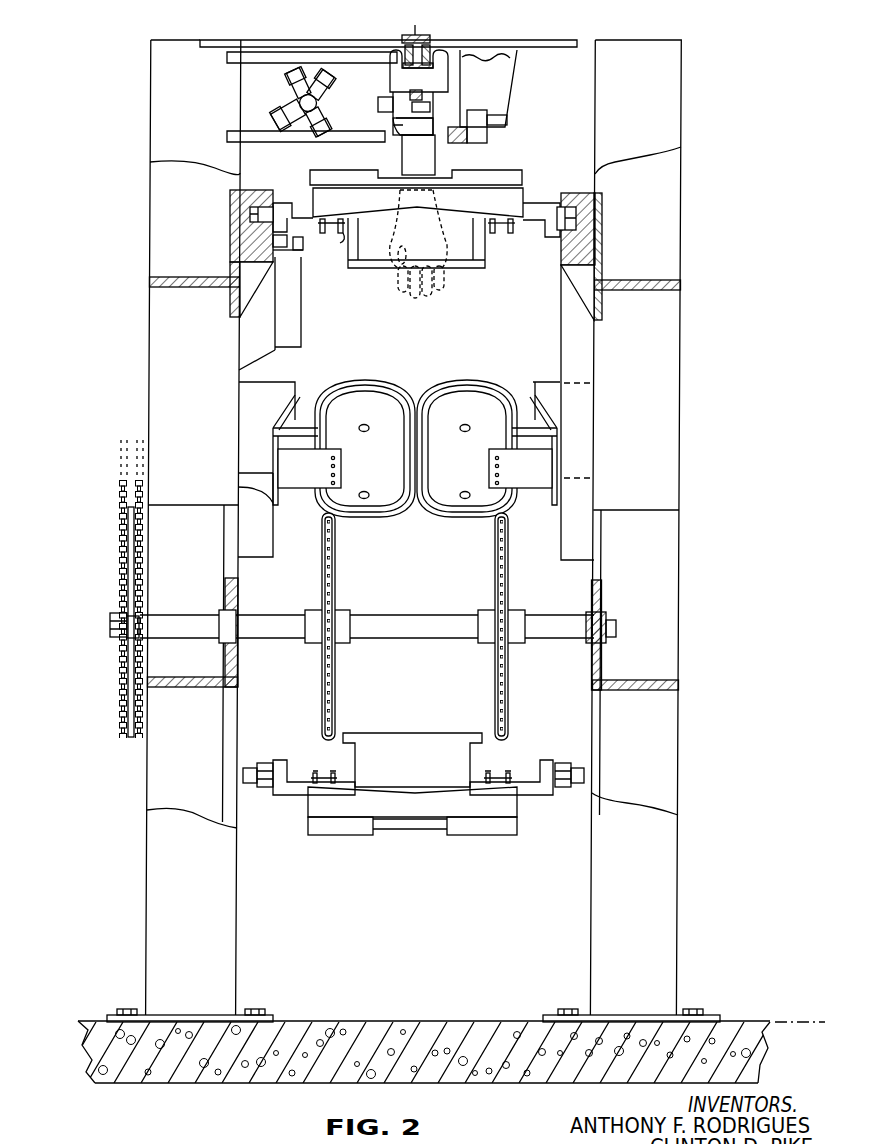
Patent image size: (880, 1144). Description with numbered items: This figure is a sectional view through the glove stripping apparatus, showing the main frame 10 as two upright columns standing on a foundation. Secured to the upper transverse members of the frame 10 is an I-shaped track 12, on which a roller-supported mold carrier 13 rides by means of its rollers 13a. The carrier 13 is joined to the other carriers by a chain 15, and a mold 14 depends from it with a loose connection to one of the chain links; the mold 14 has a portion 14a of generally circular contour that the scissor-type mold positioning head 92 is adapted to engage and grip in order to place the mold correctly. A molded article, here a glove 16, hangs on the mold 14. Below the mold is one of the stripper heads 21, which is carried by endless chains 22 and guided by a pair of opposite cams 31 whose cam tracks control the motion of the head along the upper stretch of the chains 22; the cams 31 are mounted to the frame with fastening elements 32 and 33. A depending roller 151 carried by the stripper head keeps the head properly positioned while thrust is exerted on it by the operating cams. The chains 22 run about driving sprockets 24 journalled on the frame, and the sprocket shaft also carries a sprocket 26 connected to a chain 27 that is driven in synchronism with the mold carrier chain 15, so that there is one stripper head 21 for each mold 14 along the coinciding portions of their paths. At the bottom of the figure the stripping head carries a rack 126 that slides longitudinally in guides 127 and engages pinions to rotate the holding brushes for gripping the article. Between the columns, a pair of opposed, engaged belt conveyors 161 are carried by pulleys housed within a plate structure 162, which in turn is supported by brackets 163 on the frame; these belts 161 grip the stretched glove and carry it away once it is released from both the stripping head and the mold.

The frame 10 is at (150, 415).
The track 12 is at (415, 27).
The mold carrier 13 is at (448, 79).
The roller 13a is at (405, 46).
The mold 14 is at (430, 172).
The mold portion 14a is at (410, 140).
The chain 15 is at (405, 93).
The glove 16 is at (396, 282).
The stripper head 21 is at (307, 801).
The endless chain 22 is at (340, 233).
The driving sprocket 24 is at (335, 600).
The sprocket 26 is at (122, 712).
The chain 27 is at (121, 580).
The cam 31 is at (290, 183).
The left bolt 32 is at (251, 215).
The right bolt 33 is at (589, 218).
The mold positioning head 92 is at (296, 103).
The rack 126 is at (428, 831).
The guide 127 is at (362, 836).
The depending roller 151 is at (290, 264).
The belt conveyor 161 is at (376, 384).
The plate structure 162 is at (391, 468).
The bracket 163 is at (298, 400).